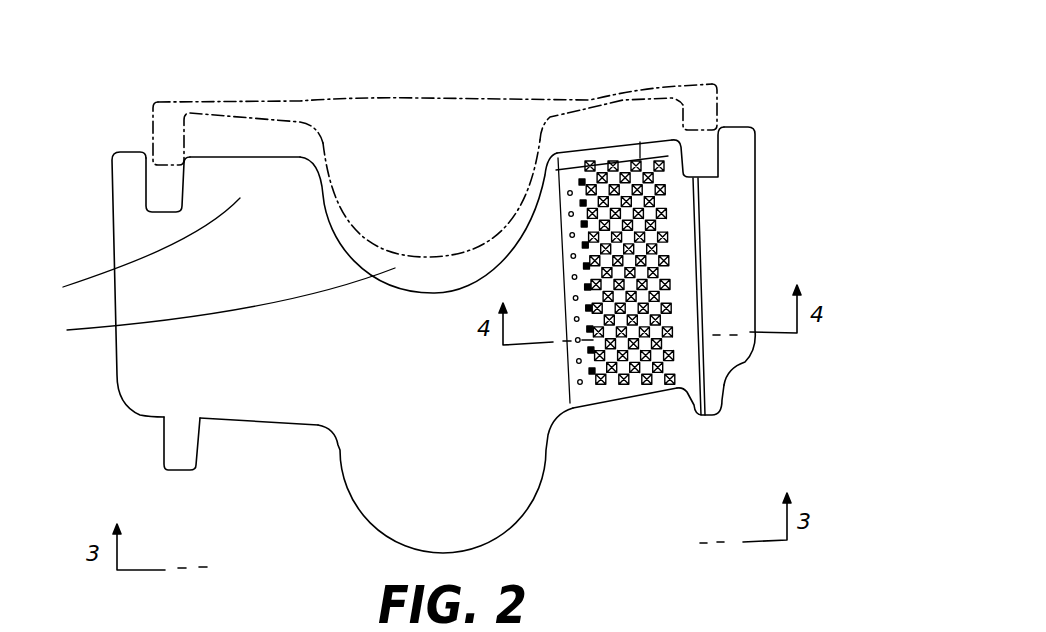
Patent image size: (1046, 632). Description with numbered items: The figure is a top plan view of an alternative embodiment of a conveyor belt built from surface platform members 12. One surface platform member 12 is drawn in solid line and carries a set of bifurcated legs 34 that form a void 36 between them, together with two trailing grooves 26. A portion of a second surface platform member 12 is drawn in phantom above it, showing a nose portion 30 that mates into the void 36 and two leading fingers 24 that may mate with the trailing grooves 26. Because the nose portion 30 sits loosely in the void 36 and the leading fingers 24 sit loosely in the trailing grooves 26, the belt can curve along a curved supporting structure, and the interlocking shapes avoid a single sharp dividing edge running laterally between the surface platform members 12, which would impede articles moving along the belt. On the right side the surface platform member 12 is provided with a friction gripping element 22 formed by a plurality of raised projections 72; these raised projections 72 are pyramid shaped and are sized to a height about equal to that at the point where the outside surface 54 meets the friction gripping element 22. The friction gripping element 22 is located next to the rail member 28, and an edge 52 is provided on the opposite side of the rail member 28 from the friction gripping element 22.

The surface platform member 12 is at (373, 122).
The friction gripping element 22 is at (608, 387).
The leading fingers 24 is at (168, 130).
The trailing grooves 26 is at (160, 197).
The rail member 28 is at (688, 395).
The nose portion 30 is at (450, 135).
The bifurcated legs 34 is at (793, 153).
The void 36 is at (217, 306).
The edge 52 is at (745, 275).
The outside surface 54 is at (385, 488).
The raised projections 72 is at (673, 335).